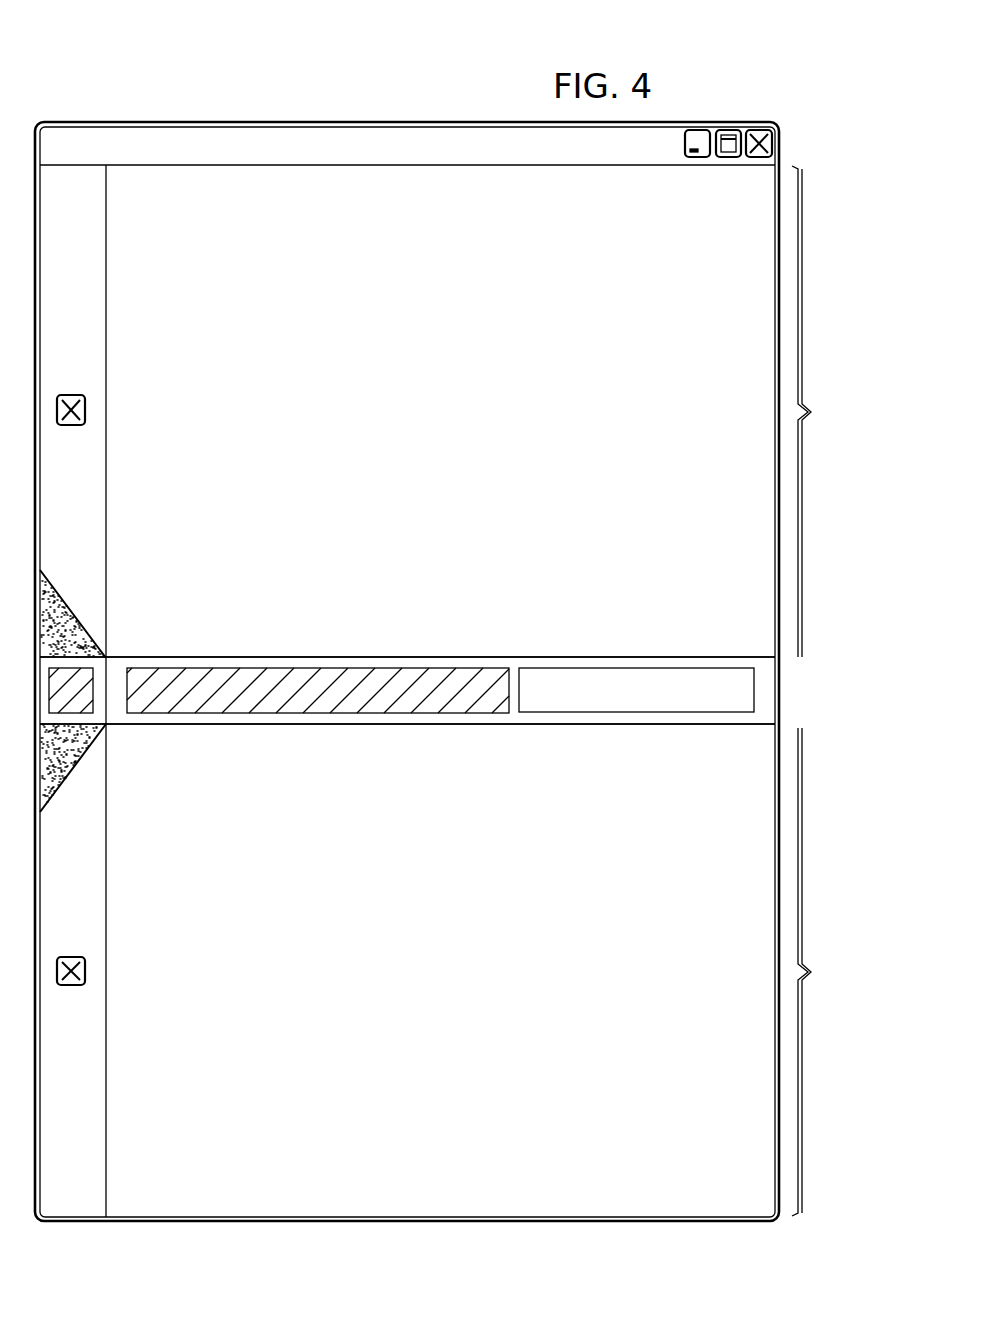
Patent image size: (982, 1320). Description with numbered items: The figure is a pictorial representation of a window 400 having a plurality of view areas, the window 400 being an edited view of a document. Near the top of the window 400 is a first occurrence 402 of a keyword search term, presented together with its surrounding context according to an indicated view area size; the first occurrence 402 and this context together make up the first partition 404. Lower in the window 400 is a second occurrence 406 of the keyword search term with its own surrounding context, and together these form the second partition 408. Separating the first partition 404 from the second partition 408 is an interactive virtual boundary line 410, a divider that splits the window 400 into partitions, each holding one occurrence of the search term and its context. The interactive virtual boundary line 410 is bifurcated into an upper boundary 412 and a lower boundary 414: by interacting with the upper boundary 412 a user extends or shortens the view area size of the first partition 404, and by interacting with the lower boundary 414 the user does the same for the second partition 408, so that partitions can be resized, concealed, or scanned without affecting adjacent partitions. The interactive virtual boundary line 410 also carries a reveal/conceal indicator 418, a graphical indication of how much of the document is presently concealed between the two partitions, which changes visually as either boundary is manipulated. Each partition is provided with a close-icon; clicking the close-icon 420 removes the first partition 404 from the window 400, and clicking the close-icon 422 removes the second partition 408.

The window 400 is at (280, 96).
The first occurrence 402 is at (428, 398).
The first partition 404 is at (855, 411).
The second occurrence 406 is at (430, 986).
The second partition 408 is at (855, 972).
The interactive virtual boundary line 410 is at (195, 798).
The upper boundary 412 is at (643, 656).
The lower boundary 414 is at (643, 725).
The reveal/conceal indicator 418 is at (410, 667).
The close-icon 420 is at (85, 409).
The close-icon 422 is at (85, 970).